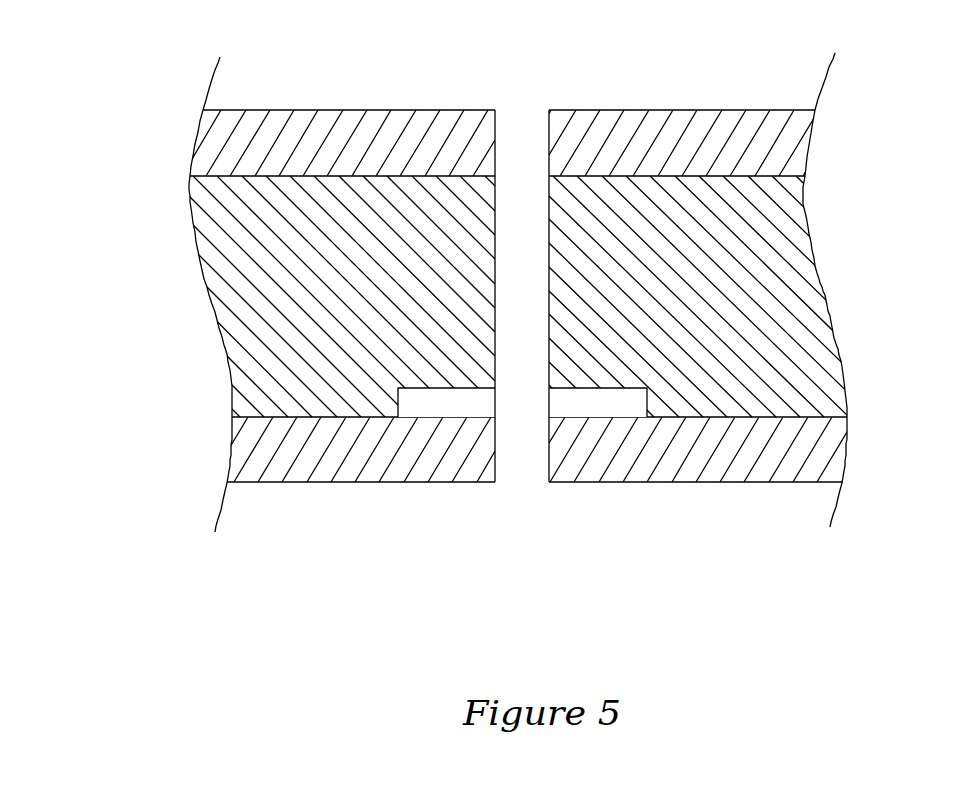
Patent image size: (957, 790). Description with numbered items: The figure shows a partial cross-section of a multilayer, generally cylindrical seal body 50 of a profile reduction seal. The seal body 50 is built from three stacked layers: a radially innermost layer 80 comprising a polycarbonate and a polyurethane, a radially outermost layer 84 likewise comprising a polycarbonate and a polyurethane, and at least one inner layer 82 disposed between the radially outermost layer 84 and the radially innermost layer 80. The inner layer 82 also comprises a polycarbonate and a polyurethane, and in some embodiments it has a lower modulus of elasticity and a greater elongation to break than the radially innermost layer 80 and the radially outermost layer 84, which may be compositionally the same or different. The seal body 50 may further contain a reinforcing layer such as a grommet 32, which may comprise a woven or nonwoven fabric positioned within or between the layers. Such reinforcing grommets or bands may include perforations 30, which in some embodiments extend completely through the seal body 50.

The perforations 30 is at (517, 123).
The grommet 32 is at (598, 403).
The multilayer, generally cylindrical seal body 50 is at (165, 227).
The radially innermost layer 80 is at (813, 450).
The inner layer 82 is at (792, 280).
The radially outermost layer 84 is at (790, 138).